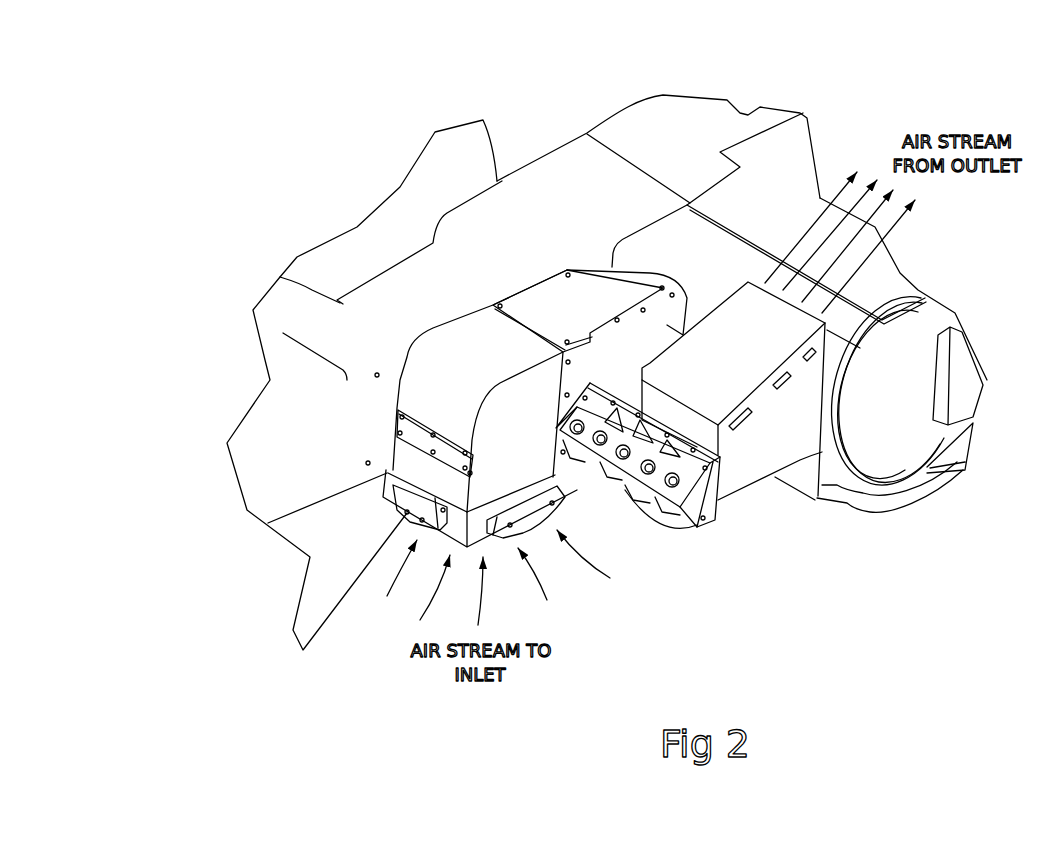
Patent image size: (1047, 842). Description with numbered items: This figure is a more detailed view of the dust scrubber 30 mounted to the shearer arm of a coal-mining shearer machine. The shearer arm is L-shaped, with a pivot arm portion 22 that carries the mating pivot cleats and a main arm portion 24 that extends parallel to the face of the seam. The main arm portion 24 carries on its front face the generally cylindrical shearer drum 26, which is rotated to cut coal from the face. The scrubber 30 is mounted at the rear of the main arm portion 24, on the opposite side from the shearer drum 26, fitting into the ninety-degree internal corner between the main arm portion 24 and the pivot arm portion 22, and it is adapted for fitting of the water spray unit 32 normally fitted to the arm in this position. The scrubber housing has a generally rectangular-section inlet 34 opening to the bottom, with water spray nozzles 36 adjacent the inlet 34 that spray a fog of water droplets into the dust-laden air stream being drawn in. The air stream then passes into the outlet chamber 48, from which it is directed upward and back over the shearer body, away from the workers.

The pivot arm portion 22 is at (837, 513).
The main arm portion 24 is at (526, 190).
The shearer drum 26 is at (405, 208).
The dust scrubber 30 is at (585, 283).
The water spray unit 32 is at (708, 512).
The inlet 34 is at (526, 446).
The water spray nozzles 36 is at (397, 506).
The outlet chamber 48 is at (787, 454).